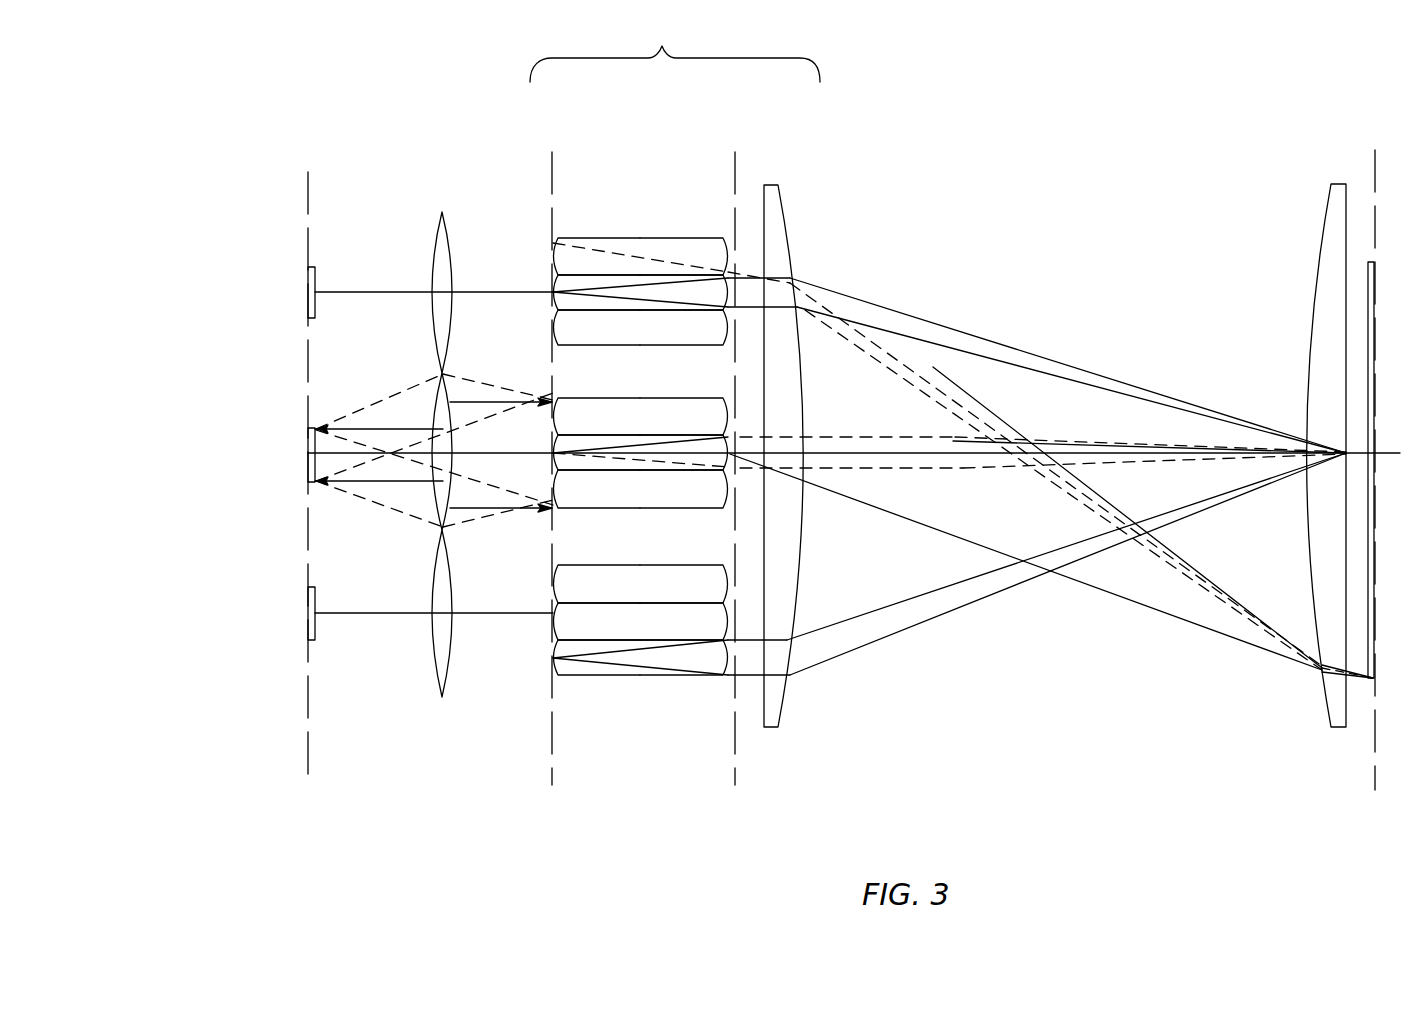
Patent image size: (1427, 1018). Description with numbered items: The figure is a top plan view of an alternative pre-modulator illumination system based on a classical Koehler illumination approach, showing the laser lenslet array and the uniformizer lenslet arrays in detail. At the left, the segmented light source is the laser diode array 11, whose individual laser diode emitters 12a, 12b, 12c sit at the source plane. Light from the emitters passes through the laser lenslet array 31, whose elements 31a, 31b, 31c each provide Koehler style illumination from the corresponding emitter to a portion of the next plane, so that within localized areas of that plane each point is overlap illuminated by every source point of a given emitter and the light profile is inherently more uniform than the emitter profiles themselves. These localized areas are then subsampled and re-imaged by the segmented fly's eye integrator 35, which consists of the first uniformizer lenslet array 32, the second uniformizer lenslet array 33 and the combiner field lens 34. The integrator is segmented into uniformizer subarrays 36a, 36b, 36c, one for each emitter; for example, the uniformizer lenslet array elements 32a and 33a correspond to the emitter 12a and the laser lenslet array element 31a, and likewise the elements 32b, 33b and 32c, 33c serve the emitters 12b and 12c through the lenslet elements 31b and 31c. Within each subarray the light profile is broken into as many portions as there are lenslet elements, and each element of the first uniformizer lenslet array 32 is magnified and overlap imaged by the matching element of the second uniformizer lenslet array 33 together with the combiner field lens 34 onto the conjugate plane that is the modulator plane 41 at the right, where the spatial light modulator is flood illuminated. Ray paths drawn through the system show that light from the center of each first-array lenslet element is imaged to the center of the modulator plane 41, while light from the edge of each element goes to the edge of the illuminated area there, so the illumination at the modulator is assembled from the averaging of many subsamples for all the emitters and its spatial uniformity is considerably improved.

The laser diode array 11 is at (306, 766).
The laser diode emitter 12a is at (306, 290).
The laser diode emitter 12b is at (306, 436).
The laser diode emitter 12c is at (306, 610).
The laser lenslet array 31 is at (401, 506).
The laser lenslet array element 31a is at (438, 218).
The laser lenslet array element 31b is at (438, 420).
The laser lenslet array element 31c is at (438, 612).
The uniformizer lenslet array 32 is at (556, 453).
The uniformizer lenslet array element 32a is at (556, 235).
The uniformizer lenslet array element 32b is at (553, 398).
The uniformizer lenslet array element 32c is at (558, 566).
The uniformizer lenslet array 33 is at (766, 449).
The uniformizer lenslet array element 33a is at (726, 240).
The uniformizer lenslet array element 33b is at (722, 390).
The uniformizer lenslet array element 33c is at (722, 558).
The combiner field lens 34 is at (784, 695).
The segmented fly's eye integrator 35 is at (1332, 718).
The uniformizer subarray 36a is at (650, 212).
The uniformizer subarray 36b is at (586, 390).
The uniformizer subarray 36c is at (586, 550).
The modulator plane 41 is at (1374, 765).